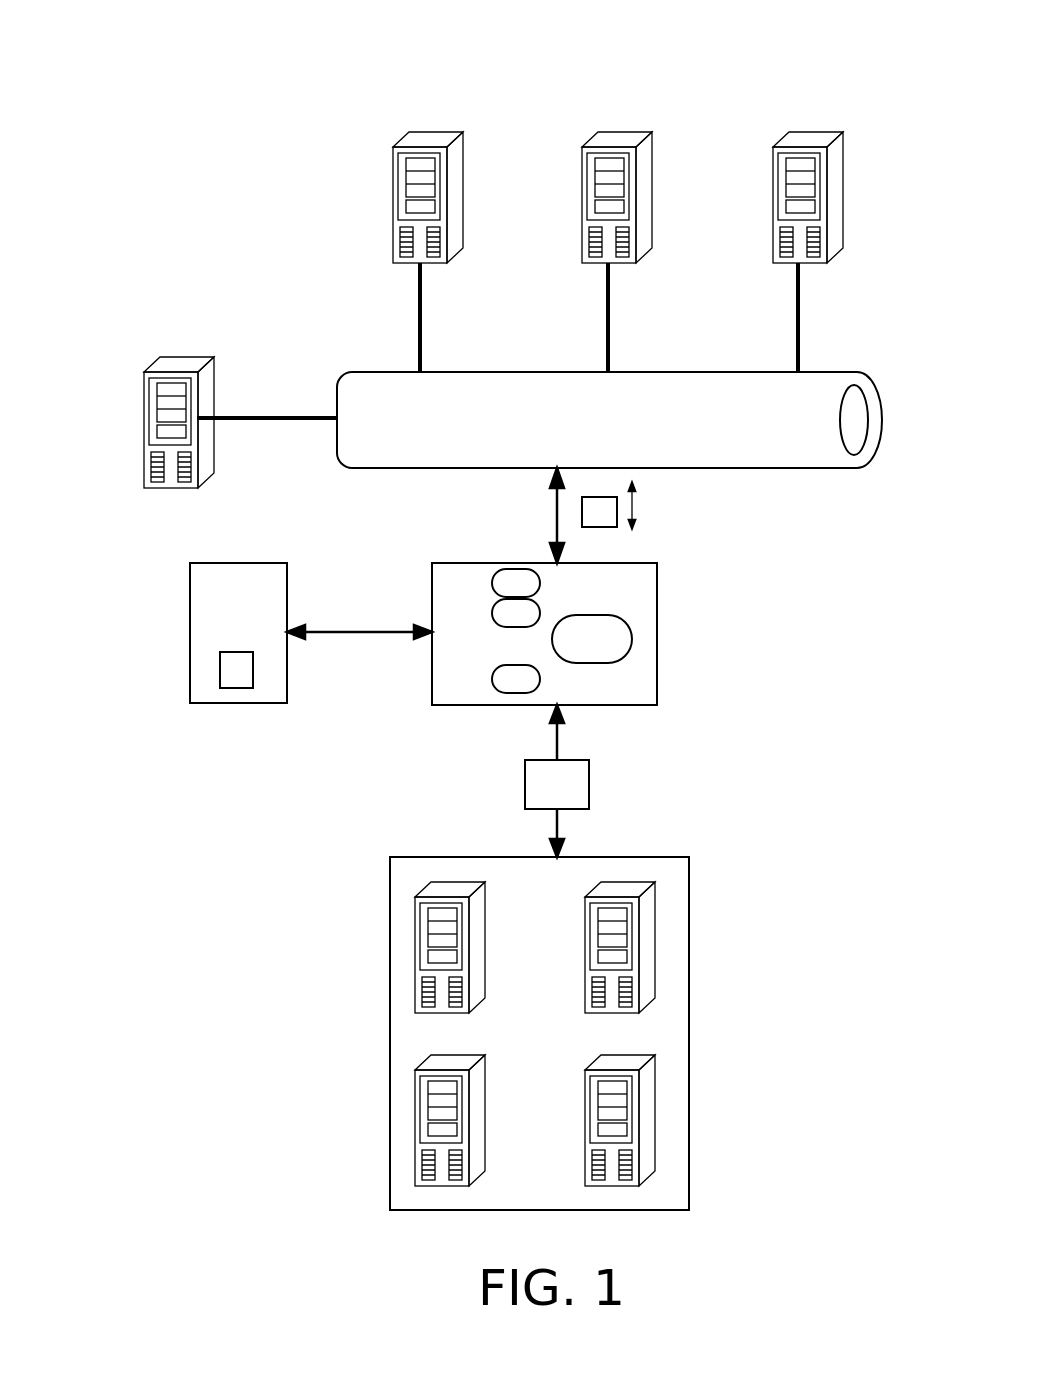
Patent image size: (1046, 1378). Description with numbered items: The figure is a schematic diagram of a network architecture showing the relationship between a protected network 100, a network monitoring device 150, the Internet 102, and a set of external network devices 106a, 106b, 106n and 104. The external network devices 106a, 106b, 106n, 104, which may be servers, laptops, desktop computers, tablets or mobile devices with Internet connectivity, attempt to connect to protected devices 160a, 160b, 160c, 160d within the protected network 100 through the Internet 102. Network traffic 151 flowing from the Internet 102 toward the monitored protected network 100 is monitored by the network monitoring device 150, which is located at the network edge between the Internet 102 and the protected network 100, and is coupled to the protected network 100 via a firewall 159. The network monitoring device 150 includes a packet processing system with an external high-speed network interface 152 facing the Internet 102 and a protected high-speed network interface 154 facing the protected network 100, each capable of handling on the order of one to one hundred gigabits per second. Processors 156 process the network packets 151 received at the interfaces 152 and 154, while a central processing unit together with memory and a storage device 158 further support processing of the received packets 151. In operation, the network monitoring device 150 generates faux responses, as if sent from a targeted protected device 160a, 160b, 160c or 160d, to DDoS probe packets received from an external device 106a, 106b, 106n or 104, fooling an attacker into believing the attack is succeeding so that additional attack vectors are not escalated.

The protected network 100 is at (665, 857).
The Internet 102 is at (838, 372).
The external network device 104 is at (188, 357).
The external network device 106a is at (442, 132).
The external network device 106b is at (630, 132).
The external network device 106n is at (820, 132).
The network monitoring device 150 is at (640, 556).
The network traffic 151 is at (599, 497).
The external high-speed network interface 152 is at (522, 568).
The protected high-speed network interface 154 is at (510, 694).
The processors 156 is at (492, 610).
The storage device 158 is at (190, 598).
The firewall 159 is at (557, 784).
The protected device 160a is at (415, 945).
The protected device 160b is at (415, 1127).
The protected device 160c is at (655, 935).
The protected device 160d is at (655, 1113).